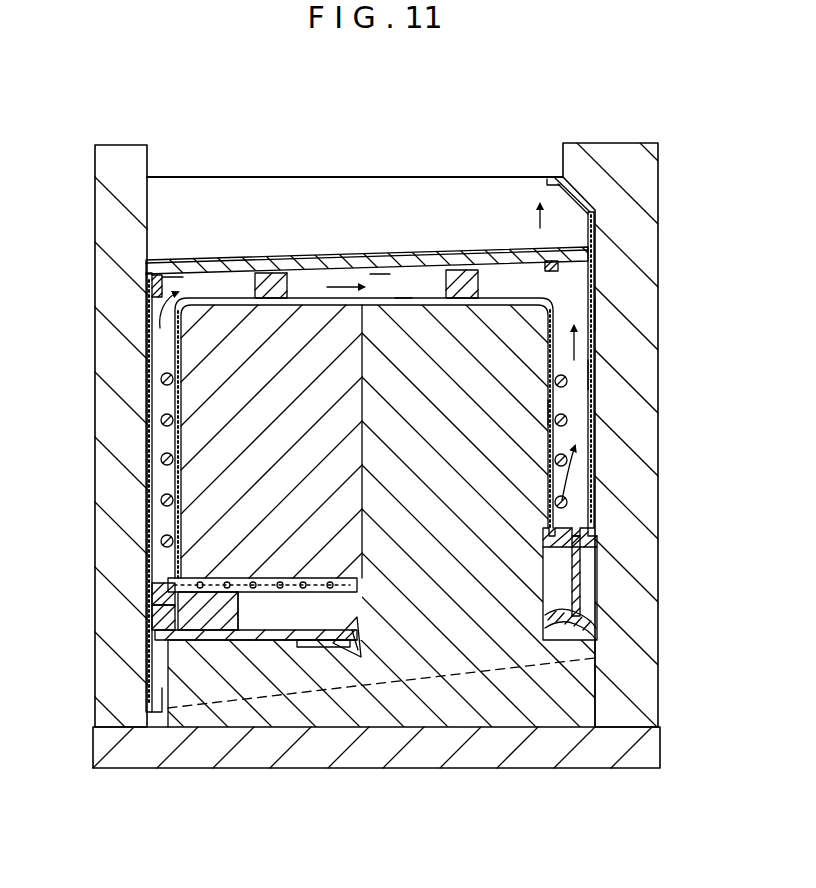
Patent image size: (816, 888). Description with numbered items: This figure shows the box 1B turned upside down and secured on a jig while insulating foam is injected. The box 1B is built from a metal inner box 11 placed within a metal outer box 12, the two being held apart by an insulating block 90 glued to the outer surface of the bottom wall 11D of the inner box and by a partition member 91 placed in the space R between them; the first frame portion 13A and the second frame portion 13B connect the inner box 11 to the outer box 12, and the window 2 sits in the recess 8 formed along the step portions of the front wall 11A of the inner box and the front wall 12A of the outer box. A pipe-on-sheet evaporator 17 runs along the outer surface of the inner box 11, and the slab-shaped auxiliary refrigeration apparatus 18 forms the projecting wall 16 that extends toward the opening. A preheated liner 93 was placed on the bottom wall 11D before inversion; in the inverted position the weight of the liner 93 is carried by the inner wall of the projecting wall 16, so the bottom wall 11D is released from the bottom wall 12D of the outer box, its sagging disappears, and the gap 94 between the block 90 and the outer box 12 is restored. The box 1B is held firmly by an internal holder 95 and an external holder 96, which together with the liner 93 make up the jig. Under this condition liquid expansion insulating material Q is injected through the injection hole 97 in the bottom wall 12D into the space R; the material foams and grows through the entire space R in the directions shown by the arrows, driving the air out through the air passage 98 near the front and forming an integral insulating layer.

The injection hole 97 is at (179, 270).
The space R is at (222, 285).
The insulating block 90 is at (243, 287).
The gap 94 is at (283, 262).
The bottom wall of outer box 12D is at (378, 272).
The bottom wall of inner box 11D is at (403, 297).
The liner 93 is at (190, 347).
The evaporator 17 is at (160, 380).
The outer box 12 is at (147, 437).
The inner box 11 is at (178, 513).
The expansion insulating material Q is at (152, 583).
The partition member 91 is at (177, 605).
The auxiliary refrigeration apparatus 18 is at (285, 593).
The air passage 98 is at (545, 268).
The box 1B is at (577, 312).
The front wall of outer box 12A is at (585, 366).
The front wall of inner box 11A is at (553, 411).
The first frame portion 13A is at (597, 540).
The window 2 is at (580, 562).
The recess 8 is at (590, 585).
The projecting wall 16 is at (262, 640).
The second frame portion 13B is at (365, 655).
The internal holder 95 is at (478, 690).
The external holder 96 is at (580, 768).